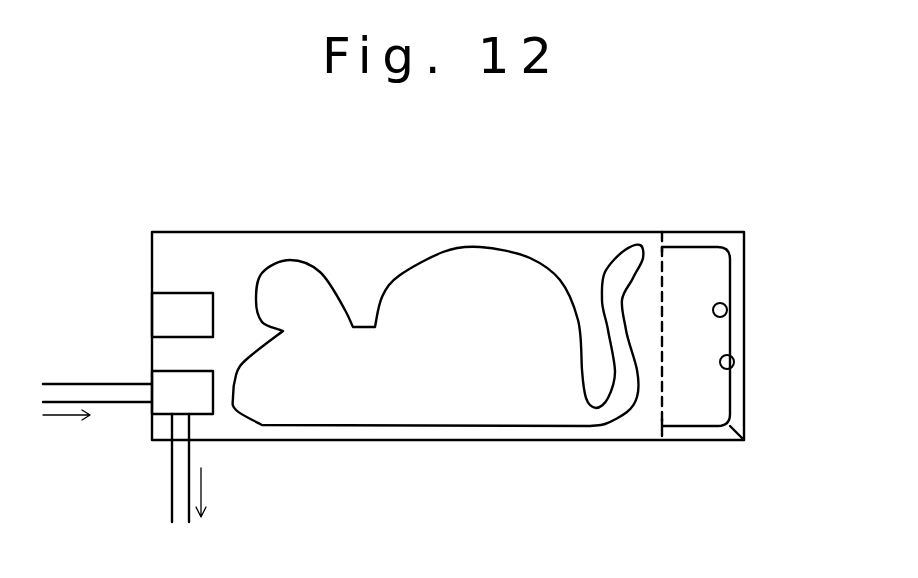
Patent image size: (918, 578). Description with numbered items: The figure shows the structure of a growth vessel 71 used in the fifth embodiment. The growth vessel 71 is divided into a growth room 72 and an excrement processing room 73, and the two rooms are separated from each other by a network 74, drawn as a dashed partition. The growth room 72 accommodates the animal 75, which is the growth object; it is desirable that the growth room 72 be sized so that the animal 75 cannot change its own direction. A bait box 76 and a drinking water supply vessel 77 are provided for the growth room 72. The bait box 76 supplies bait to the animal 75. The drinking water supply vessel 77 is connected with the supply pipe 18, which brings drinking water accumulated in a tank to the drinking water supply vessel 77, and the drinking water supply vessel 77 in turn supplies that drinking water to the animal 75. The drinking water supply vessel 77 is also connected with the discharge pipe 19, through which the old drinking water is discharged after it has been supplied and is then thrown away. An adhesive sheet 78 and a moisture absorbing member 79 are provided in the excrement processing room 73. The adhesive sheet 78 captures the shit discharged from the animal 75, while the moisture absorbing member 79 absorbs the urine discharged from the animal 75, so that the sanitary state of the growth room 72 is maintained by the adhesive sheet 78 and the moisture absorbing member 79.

The growth vessel 71 is at (448, 280).
The growth room 72 is at (235, 250).
The excrement processing room 73 is at (690, 272).
The network 74 is at (663, 368).
The animal 75 is at (466, 288).
The bait box 76 is at (170, 313).
The drinking water supply vessel 77 is at (170, 393).
The adhesive sheet 78 is at (728, 428).
The moisture absorbing member 79 is at (730, 362).
The supply pipe 18 is at (118, 402).
The discharge pipe 19 is at (170, 478).